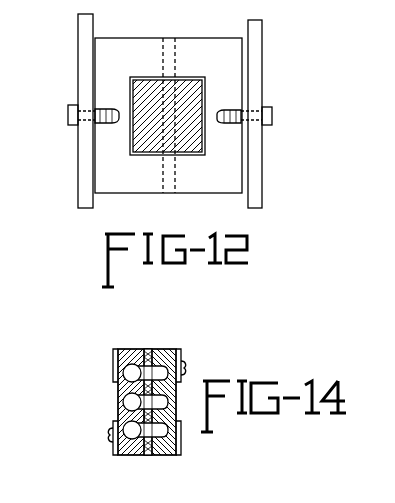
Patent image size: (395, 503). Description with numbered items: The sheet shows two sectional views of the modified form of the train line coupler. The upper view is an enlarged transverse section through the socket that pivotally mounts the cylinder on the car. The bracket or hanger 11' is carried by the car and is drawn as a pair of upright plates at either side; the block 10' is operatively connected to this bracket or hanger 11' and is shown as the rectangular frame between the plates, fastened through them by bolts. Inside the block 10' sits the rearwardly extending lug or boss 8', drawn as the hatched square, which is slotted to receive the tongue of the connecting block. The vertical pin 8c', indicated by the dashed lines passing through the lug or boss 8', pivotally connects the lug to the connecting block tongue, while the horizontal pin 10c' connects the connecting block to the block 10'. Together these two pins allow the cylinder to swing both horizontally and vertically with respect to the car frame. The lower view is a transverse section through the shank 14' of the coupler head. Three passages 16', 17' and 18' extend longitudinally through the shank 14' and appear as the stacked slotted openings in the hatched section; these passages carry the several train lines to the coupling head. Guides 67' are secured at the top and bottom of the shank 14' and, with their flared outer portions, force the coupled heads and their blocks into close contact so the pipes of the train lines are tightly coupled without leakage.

In FIG. 12, the bracket or hanger 11' is at (171, 111).
In FIG. 12, the block 10' is at (168, 103).
In FIG. 12, the vertical pin 8c' is at (183, 104).
In FIG. 12, the lug or boss 8' is at (169, 101).
In FIG. 12, the horizontal pin 10c' is at (266, 120).
In FIG. 14, the shank 14' is at (153, 394).
In FIG. 14, the guide 67' is at (162, 392).
In FIG. 14, the passage 16' is at (120, 377).
In FIG. 14, the passage 17' is at (119, 408).
In FIG. 14, the passage 18' is at (120, 438).